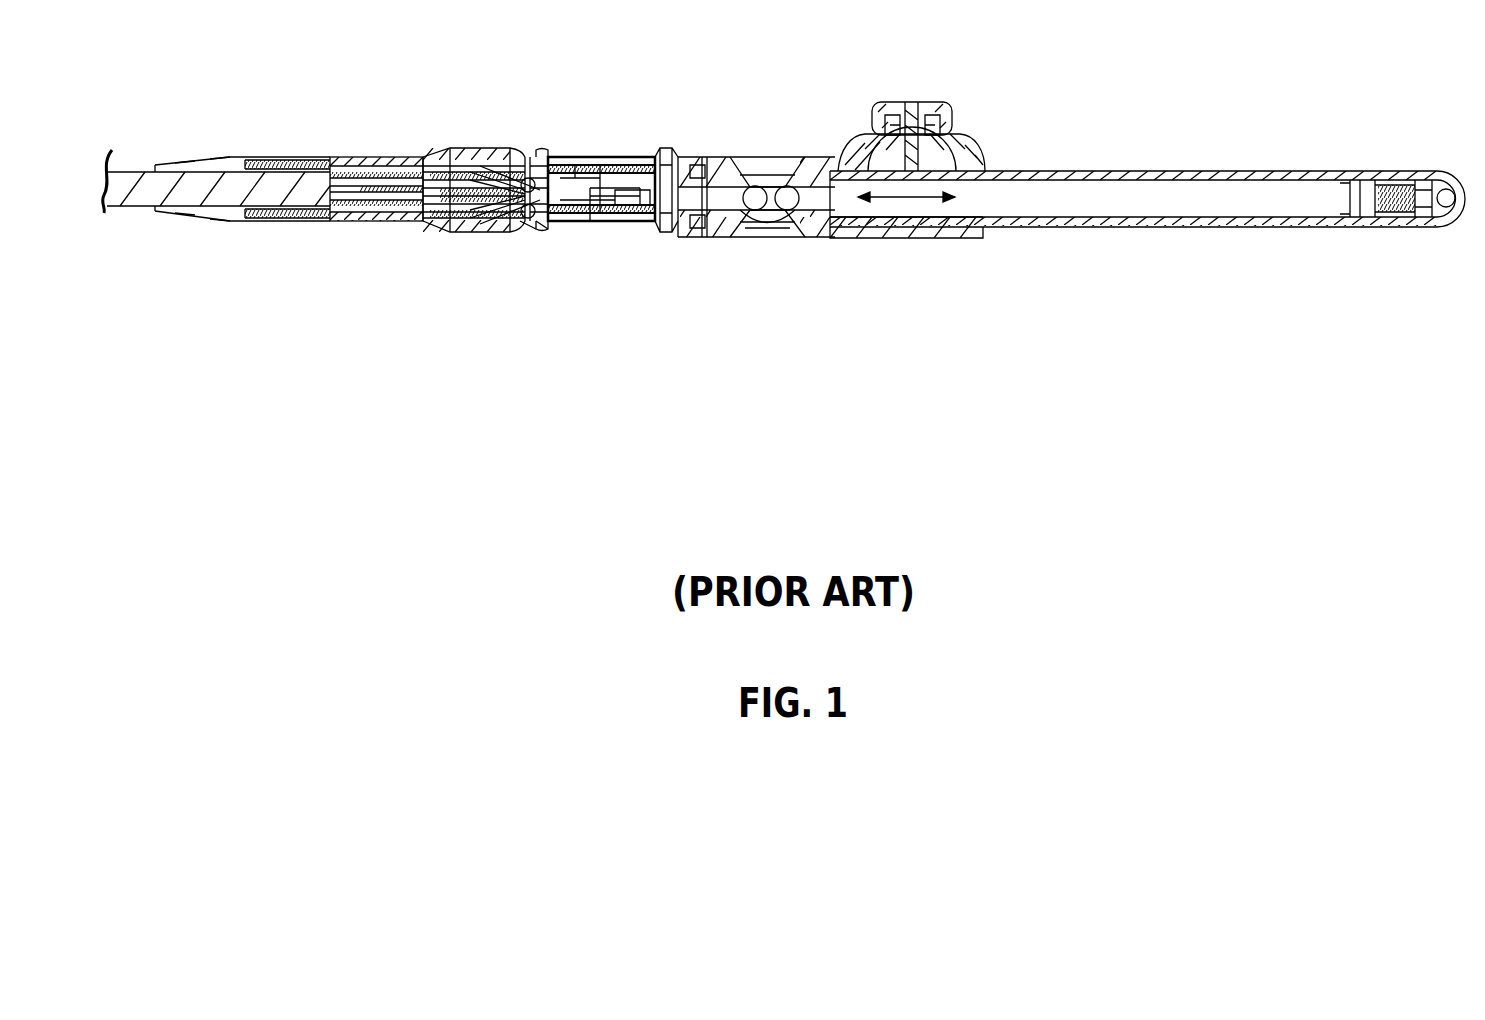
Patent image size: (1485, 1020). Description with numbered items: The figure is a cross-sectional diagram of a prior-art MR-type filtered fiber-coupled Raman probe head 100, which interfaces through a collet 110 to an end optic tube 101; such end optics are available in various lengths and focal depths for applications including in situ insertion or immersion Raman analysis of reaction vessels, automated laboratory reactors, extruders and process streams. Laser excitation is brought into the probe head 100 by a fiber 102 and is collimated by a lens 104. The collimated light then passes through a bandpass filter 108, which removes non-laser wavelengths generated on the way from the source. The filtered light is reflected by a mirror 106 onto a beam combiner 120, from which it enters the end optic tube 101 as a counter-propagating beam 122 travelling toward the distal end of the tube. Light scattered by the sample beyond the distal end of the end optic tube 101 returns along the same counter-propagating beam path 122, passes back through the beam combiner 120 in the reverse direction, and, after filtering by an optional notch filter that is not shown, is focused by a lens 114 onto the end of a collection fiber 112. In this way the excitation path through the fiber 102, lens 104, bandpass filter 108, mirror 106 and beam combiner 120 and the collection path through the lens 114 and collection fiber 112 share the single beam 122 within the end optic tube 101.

The Raman probe head 100 is at (422, 249).
The end optic tube 101 is at (1106, 247).
The fiber 102 is at (352, 168).
The lens 104 is at (536, 152).
The mirror 106 is at (675, 160).
The bandpass filter 108 is at (596, 160).
The collet 110 is at (857, 119).
The collection fiber 112 is at (357, 200).
The lens 114 is at (535, 222).
The beam combiner 120 is at (606, 222).
The counter-propagating beam 122 is at (901, 205).